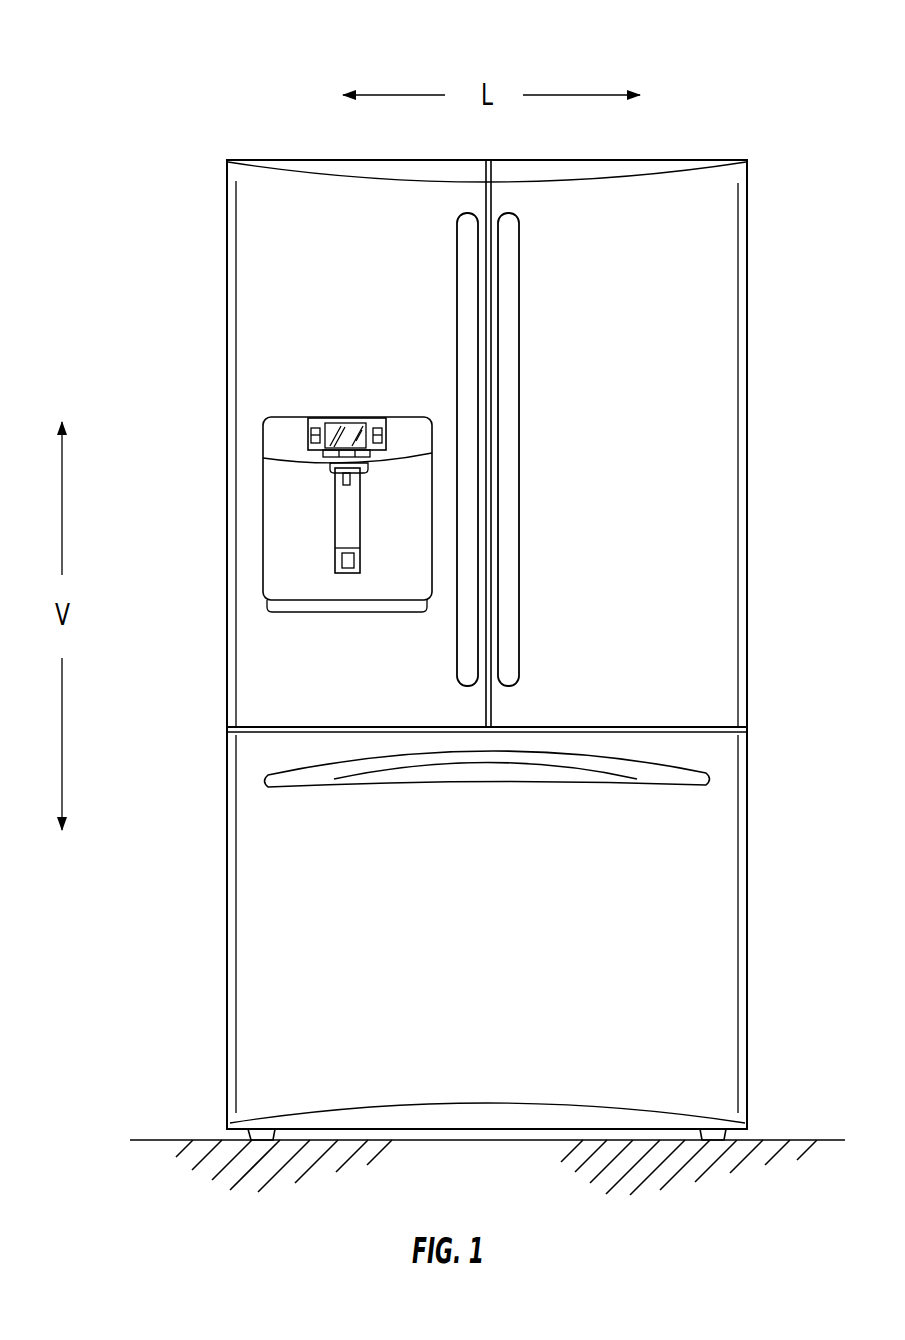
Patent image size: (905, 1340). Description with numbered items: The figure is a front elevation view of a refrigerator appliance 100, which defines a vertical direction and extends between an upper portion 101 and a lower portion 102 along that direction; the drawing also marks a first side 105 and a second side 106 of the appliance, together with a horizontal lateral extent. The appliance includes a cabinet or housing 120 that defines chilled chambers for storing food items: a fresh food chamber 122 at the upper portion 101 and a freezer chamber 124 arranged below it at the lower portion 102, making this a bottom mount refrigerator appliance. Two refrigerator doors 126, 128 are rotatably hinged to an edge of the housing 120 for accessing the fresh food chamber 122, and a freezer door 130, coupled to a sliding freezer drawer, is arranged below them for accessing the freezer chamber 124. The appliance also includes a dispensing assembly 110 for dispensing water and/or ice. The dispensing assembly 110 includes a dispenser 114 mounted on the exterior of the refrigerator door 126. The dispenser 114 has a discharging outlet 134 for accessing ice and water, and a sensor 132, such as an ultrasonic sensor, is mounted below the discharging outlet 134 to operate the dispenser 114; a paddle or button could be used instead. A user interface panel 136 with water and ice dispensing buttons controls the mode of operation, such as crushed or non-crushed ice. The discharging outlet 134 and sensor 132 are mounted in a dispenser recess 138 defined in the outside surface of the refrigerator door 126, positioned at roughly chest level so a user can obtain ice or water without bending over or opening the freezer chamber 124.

The refrigerator appliance 100 is at (712, 60).
The upper portion 101 is at (220, 158).
The lower portion 102 is at (216, 1125).
The first side 105 is at (226, 152).
The second side 106 is at (736, 136).
The dispensing assembly 110 is at (270, 348).
The dispenser 114 is at (290, 560).
The cabinet or housing 120 is at (228, 937).
The fresh food chamber 122 is at (709, 452).
The freezer chamber 124 is at (715, 877).
The refrigerator door 126 is at (258, 267).
The refrigerator door 128 is at (715, 322).
The freezer door 130 is at (710, 992).
The sensor 132 is at (335, 505).
The discharging outlet 134 is at (328, 470).
The user interface panel 136 is at (316, 418).
The dispenser recess 138 is at (306, 590).